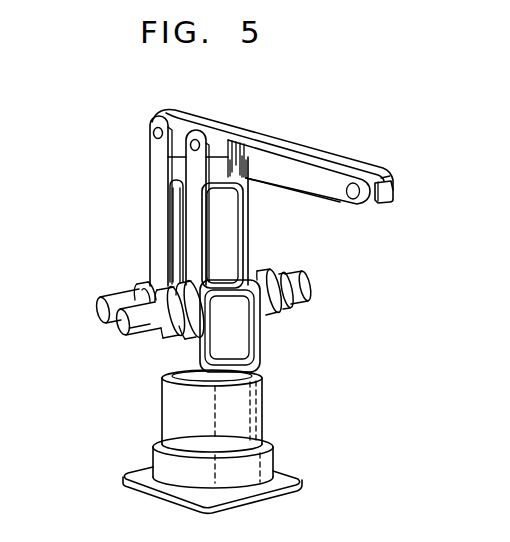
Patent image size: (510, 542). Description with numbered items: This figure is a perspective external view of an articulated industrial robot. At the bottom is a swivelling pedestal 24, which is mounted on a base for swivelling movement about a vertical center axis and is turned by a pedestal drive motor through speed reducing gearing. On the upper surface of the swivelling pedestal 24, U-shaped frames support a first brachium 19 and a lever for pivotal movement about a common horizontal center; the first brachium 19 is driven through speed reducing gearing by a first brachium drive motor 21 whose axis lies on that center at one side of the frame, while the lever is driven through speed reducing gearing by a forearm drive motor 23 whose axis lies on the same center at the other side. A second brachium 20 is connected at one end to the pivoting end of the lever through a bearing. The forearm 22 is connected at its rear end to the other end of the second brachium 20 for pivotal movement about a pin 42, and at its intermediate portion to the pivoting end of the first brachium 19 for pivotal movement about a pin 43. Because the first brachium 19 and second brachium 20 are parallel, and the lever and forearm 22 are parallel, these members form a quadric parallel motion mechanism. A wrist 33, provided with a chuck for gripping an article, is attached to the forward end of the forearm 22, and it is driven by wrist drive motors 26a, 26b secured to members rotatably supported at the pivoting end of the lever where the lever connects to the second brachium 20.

The first brachium 19 is at (232, 214).
The second brachium 20 is at (137, 191).
The first brachium drive motor 21 is at (309, 297).
The forearm 22 is at (320, 172).
The forearm drive motor 23 is at (140, 332).
The swivelling pedestal 24 is at (258, 408).
The wrist drive motor 26a is at (112, 296).
The wrist drive motor 26b is at (276, 270).
The wrist 33 is at (388, 202).
The pin 42 is at (155, 125).
The pin 43 is at (199, 136).